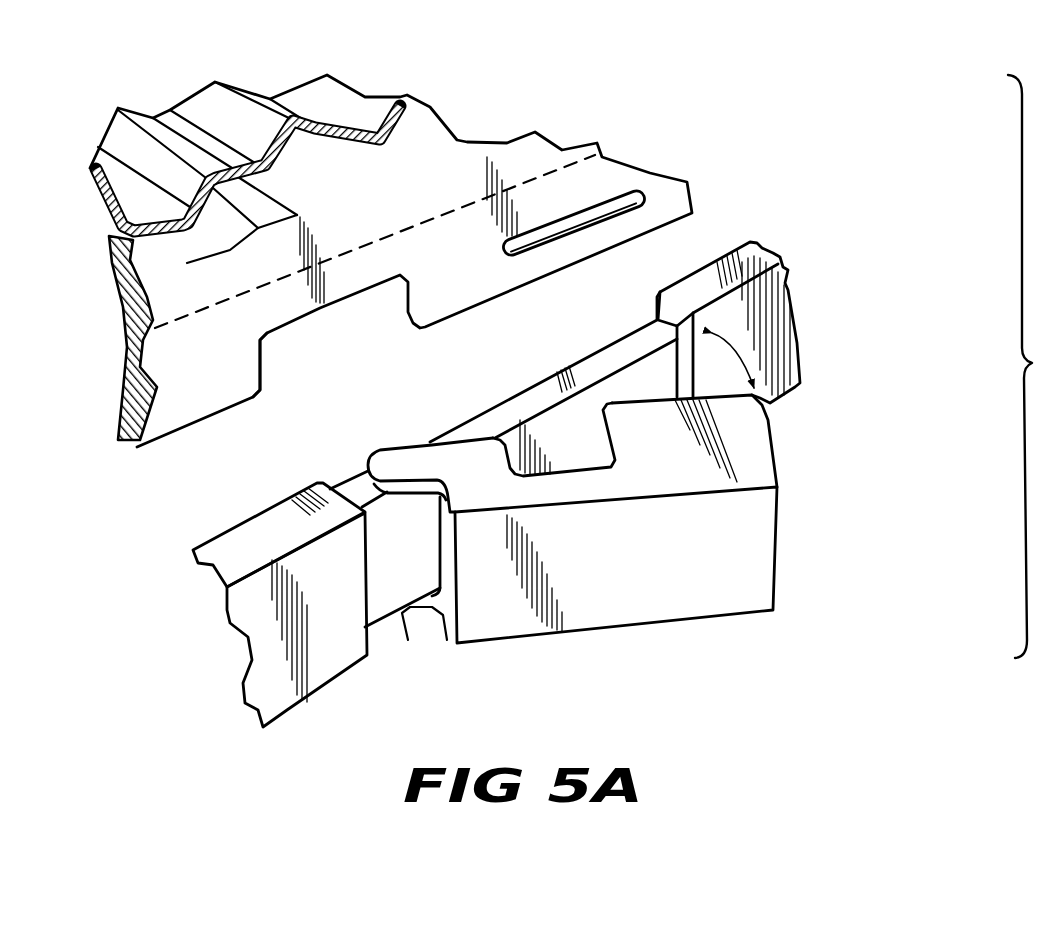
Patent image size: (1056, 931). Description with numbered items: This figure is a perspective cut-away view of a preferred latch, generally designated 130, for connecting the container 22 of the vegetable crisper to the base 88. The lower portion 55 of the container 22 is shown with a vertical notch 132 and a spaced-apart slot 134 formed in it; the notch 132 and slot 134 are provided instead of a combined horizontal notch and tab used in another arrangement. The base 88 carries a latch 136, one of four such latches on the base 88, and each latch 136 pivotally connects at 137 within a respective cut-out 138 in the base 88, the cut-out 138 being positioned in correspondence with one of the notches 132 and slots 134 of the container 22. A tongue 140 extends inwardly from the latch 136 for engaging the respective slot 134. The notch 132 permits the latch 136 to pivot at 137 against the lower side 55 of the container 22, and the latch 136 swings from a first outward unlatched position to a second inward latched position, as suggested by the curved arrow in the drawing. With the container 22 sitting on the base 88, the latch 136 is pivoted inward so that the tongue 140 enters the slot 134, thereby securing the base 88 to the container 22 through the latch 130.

The container 22 is at (480, 128).
The lower portion 55 is at (172, 357).
The base 88 is at (238, 523).
The latch 130 is at (882, 570).
The vertical notch 132 is at (307, 352).
The slot 134 is at (569, 222).
The latch 136 is at (637, 600).
The pivot 137 is at (430, 461).
The cut-out 138 is at (410, 604).
The tongue 140 is at (771, 449).